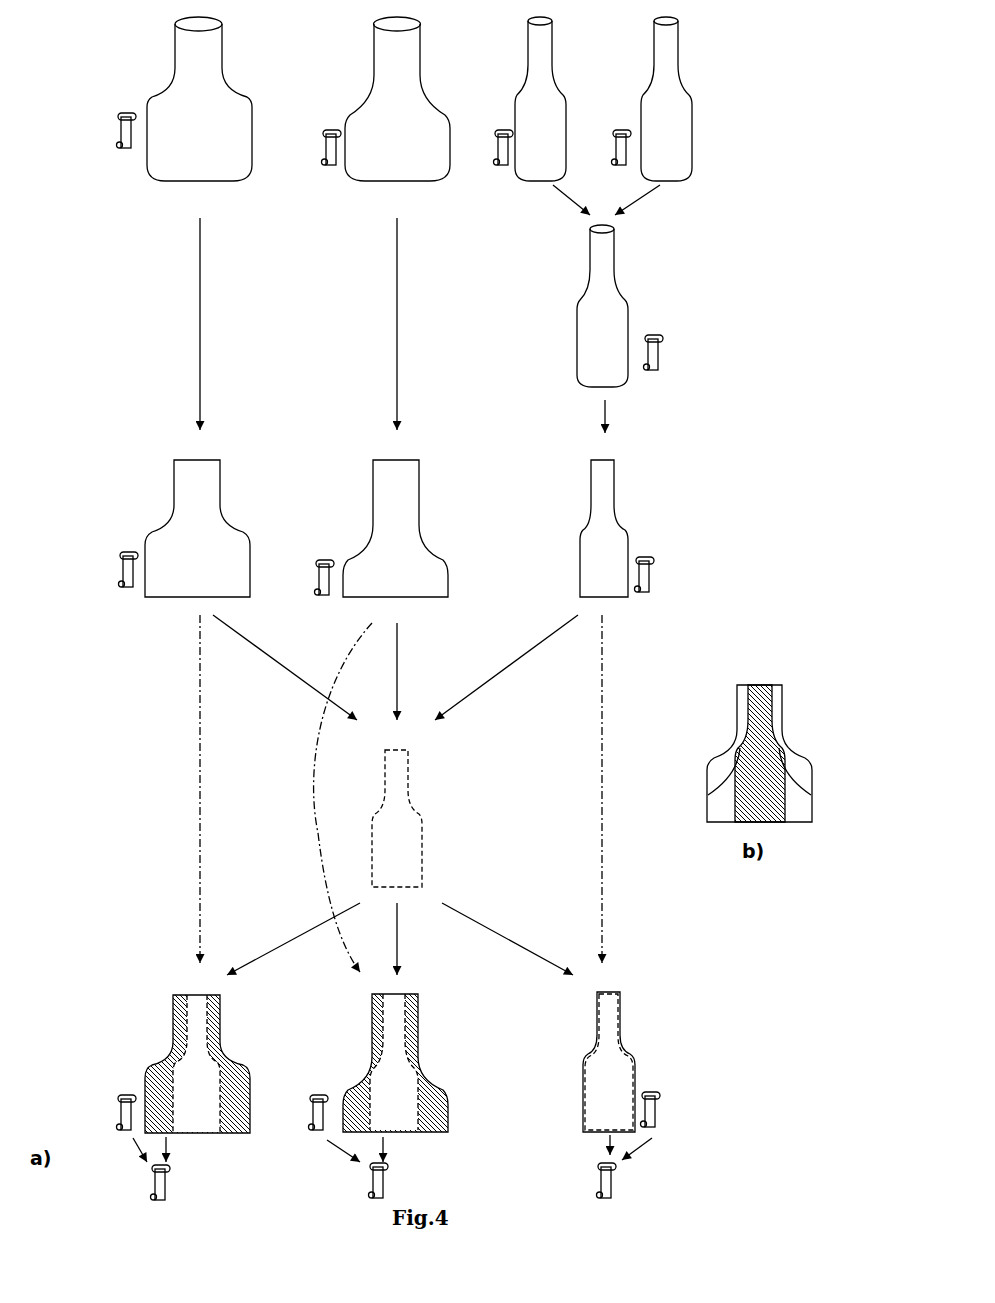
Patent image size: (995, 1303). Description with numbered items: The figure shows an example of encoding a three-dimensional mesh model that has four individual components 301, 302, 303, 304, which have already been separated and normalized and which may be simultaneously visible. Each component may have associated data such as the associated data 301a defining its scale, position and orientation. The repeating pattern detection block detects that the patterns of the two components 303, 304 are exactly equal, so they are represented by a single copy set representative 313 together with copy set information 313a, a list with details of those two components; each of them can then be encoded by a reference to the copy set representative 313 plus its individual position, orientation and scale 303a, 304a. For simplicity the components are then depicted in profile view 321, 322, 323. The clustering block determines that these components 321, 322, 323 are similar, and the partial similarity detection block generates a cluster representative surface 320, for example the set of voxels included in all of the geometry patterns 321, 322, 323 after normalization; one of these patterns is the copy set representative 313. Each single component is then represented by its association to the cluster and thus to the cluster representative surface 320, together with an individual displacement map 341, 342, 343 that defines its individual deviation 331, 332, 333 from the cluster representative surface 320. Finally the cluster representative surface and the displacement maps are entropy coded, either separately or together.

The component 301 is at (186, 99).
The associated data 301a is at (94, 621).
The component 302 is at (390, 99).
The component 303 is at (520, 99).
The component 304 is at (644, 99).
The individual position, orientation and scale 303a is at (489, 163).
The individual position, orientation and scale 304a is at (605, 160).
The copy set representative 313 is at (581, 306).
The copy set information 313a is at (677, 731).
The profile view of component 321 is at (183, 528).
The profile view of component 322 is at (382, 528).
The profile view of component 323 is at (584, 528).
The cluster representative surface (CRS) 320 is at (127, 1067).
The individual deviation 331 is at (160, 1055).
The individual deviation 332 is at (370, 1037).
The individual deviation 333 is at (622, 997).
The displacement map 341 is at (183, 1182).
The displacement map 342 is at (404, 1180).
The displacement map 343 is at (632, 1180).